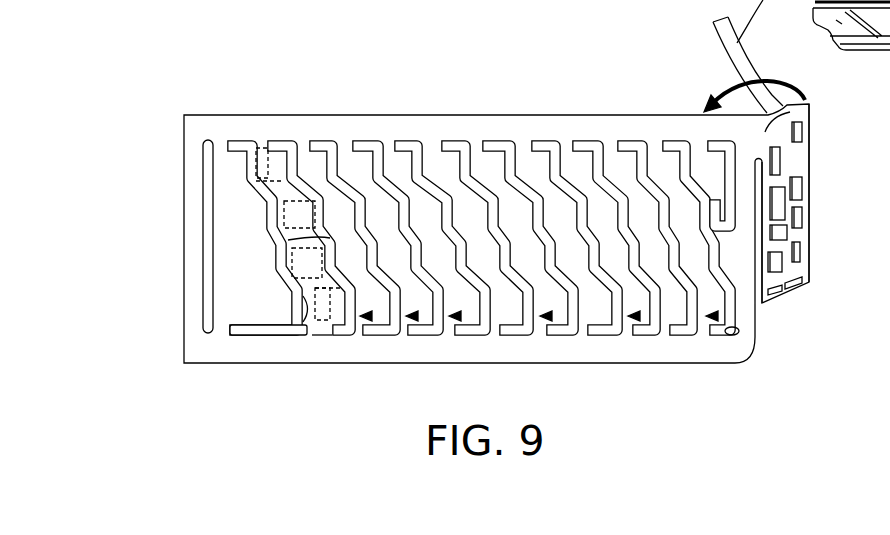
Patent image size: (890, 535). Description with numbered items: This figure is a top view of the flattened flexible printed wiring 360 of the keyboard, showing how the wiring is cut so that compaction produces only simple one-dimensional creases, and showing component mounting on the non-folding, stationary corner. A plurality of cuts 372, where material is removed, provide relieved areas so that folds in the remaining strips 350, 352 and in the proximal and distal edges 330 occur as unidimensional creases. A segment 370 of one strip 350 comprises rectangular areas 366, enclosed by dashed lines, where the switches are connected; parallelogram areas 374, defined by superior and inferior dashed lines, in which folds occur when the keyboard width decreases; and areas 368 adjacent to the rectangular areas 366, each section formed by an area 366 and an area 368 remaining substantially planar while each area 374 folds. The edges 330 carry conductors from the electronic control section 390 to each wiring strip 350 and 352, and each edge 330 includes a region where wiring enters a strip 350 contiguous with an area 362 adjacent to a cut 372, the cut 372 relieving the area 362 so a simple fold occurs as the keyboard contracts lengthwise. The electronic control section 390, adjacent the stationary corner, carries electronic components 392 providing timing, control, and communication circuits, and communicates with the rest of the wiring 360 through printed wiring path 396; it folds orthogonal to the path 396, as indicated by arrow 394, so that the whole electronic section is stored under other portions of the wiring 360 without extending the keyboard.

The proximal and distal edges 330 is at (609, 127).
The wiring strip 350 is at (461, 316).
The wiring strip 352 is at (712, 160).
The flexible printed wiring 360 is at (262, 278).
The area 362 is at (318, 342).
The rectangular areas 366 is at (262, 150).
The areas 368 is at (300, 248).
The segment 370 is at (328, 320).
The cuts 372 is at (392, 148).
The parallelogram areas 374 is at (272, 200).
The electronic control section 390 is at (812, 284).
The electronic components 392 is at (802, 133).
The arrow 394 is at (768, 82).
The printed wiring path 396 is at (806, 108).